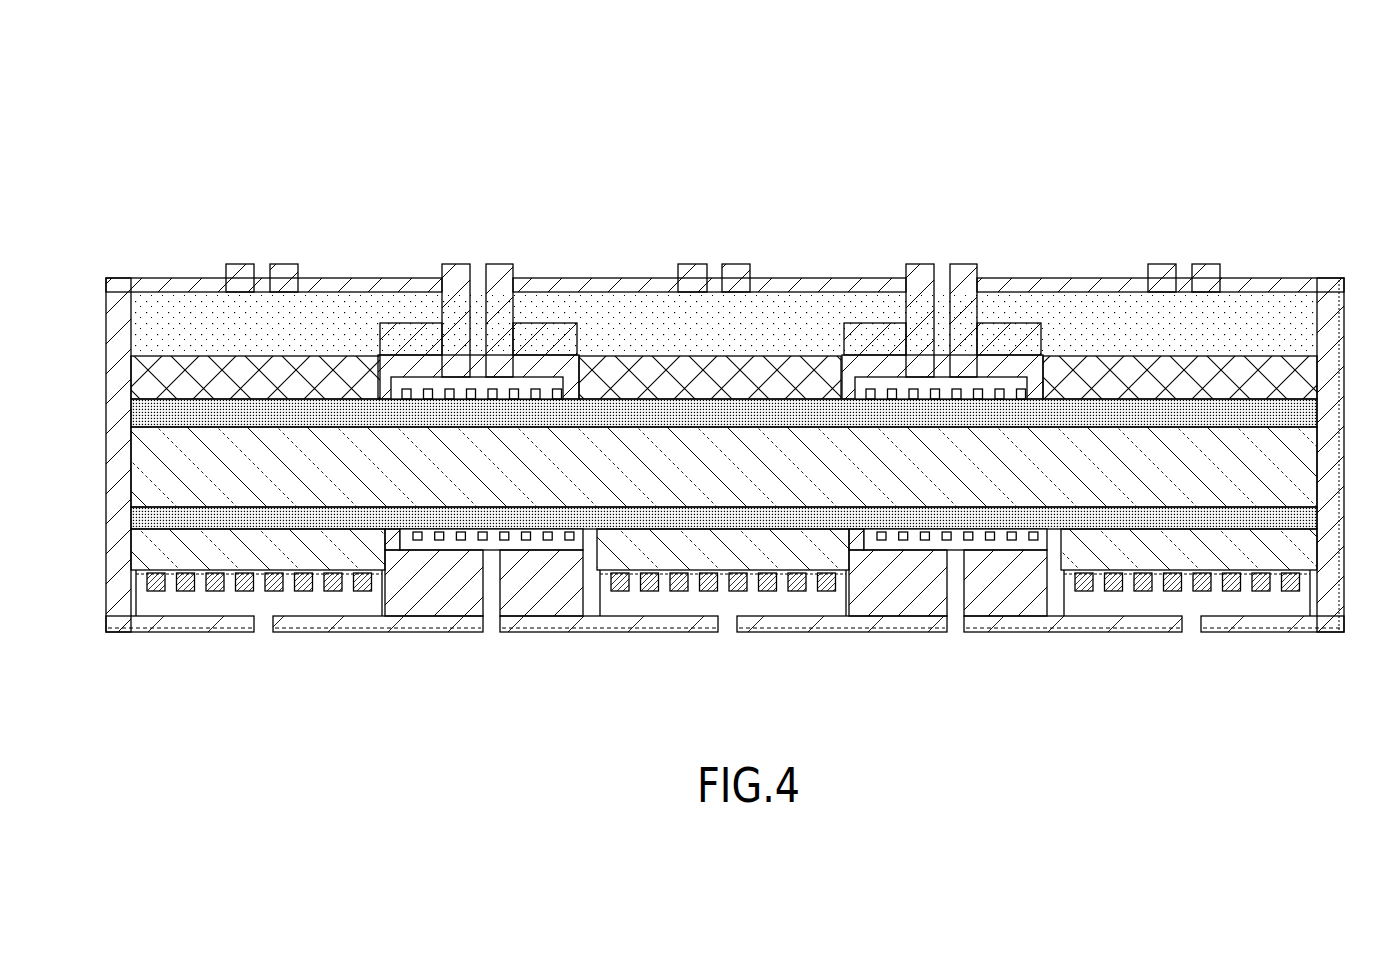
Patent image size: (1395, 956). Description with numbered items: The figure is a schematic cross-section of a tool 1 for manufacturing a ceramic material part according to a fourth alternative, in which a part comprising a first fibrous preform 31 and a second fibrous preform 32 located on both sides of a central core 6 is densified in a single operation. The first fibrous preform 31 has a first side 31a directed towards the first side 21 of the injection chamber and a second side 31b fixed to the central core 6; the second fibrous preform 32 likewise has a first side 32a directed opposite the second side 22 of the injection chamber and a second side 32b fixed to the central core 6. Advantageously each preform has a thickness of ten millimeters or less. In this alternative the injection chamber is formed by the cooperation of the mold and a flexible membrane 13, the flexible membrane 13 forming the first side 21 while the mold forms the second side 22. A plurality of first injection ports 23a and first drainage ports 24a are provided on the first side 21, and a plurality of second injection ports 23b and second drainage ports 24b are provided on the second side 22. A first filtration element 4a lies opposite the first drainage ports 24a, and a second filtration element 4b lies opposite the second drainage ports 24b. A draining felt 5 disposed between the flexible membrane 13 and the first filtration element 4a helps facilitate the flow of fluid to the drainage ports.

The tool 1 is at (725, 349).
The first filtration element 4a is at (682, 320).
The second filtration element 4b is at (682, 601).
The draining felt 5 is at (778, 320).
The central core 6 is at (1290, 464).
The flexible membrane 13 is at (368, 278).
The first side of the injection chamber 21 is at (597, 300).
The second side of the injection chamber 22 is at (600, 522).
The first injection ports 23a is at (479, 262).
The second injection ports 23b is at (490, 634).
The first drainage ports 24a is at (262, 259).
The second drainage ports 24b is at (263, 634).
The first fibrous preform 31 is at (719, 423).
The first side of the first fibrous preform 31a is at (133, 382).
The second side of the first fibrous preform 31b is at (133, 412).
The second fibrous preform 32 is at (719, 510).
The first side of the second fibrous preform 32a is at (133, 535).
The second side of the second fibrous preform 32b is at (133, 512).